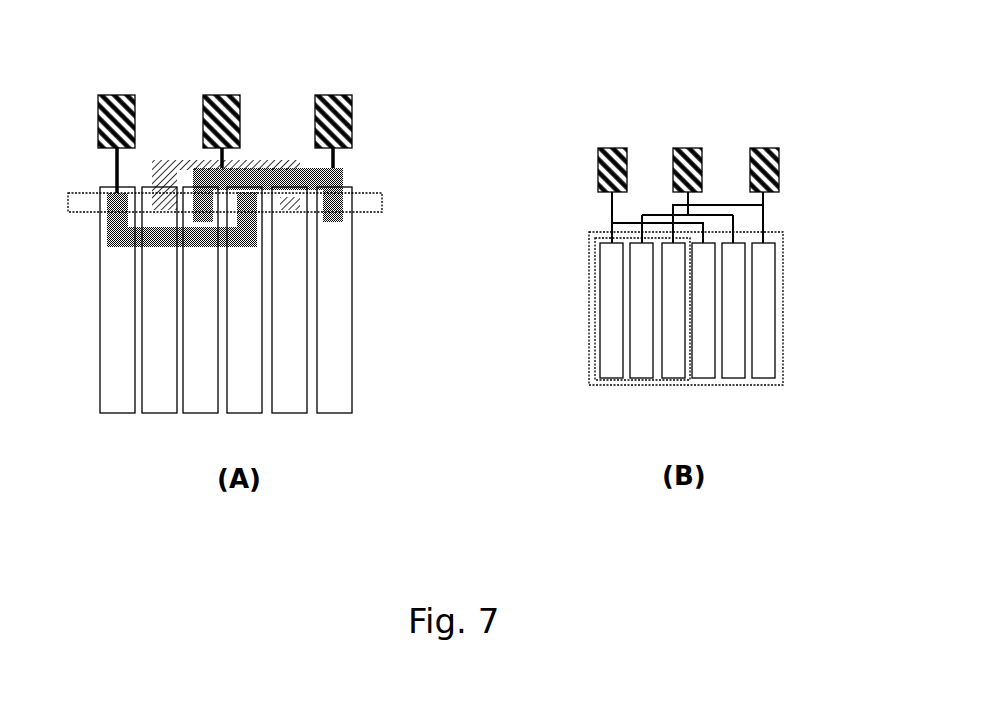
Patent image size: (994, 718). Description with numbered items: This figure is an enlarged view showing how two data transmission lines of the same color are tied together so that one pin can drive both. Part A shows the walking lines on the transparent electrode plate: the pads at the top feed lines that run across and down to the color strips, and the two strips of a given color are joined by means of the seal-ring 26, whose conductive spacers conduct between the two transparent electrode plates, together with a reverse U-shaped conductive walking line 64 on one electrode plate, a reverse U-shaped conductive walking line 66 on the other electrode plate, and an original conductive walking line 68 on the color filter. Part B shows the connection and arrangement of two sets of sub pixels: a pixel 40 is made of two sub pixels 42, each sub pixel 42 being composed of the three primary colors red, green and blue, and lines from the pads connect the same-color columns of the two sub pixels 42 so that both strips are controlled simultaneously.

The seal-ring 26 is at (85, 205).
The pixel 40 is at (590, 282).
The sub pixel 42 is at (595, 345).
The reverse U-shaped conductive walking line 64 is at (345, 218).
The reverse U-shaped conductive walking line 66 is at (120, 245).
The original conductive walking line 68 is at (130, 173).